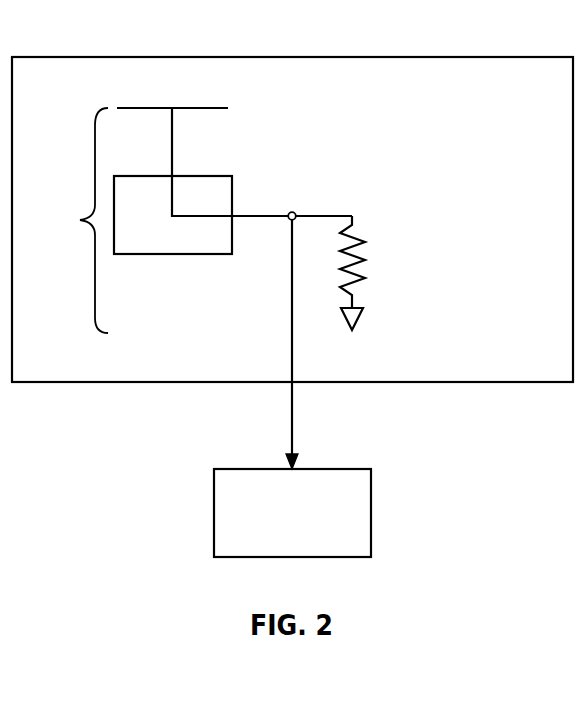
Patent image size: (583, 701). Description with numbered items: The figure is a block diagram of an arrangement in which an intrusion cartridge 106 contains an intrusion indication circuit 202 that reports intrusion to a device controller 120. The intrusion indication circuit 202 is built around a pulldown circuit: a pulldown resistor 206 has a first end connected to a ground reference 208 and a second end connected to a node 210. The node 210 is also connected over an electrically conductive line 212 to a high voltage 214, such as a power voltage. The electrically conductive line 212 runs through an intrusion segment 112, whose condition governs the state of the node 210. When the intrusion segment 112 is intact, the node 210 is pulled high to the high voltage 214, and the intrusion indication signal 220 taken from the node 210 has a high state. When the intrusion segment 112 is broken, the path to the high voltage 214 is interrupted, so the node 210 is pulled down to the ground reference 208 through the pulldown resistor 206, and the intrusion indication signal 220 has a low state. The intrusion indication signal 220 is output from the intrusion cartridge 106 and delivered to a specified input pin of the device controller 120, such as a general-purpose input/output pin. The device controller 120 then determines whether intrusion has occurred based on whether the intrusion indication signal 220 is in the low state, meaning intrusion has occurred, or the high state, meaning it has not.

The intrusion cartridge 106 is at (118, 57).
The intrusion indication circuit 202 is at (69, 220).
The high voltage 214 is at (143, 107).
The electrically conductive line 212 is at (201, 218).
The intrusion segment 112 is at (174, 255).
The node 210 is at (292, 211).
The pulldown resistor 206 is at (372, 258).
The ground reference 208 is at (362, 325).
The intrusion indication signal 220 is at (294, 402).
The device controller 120 is at (277, 558).